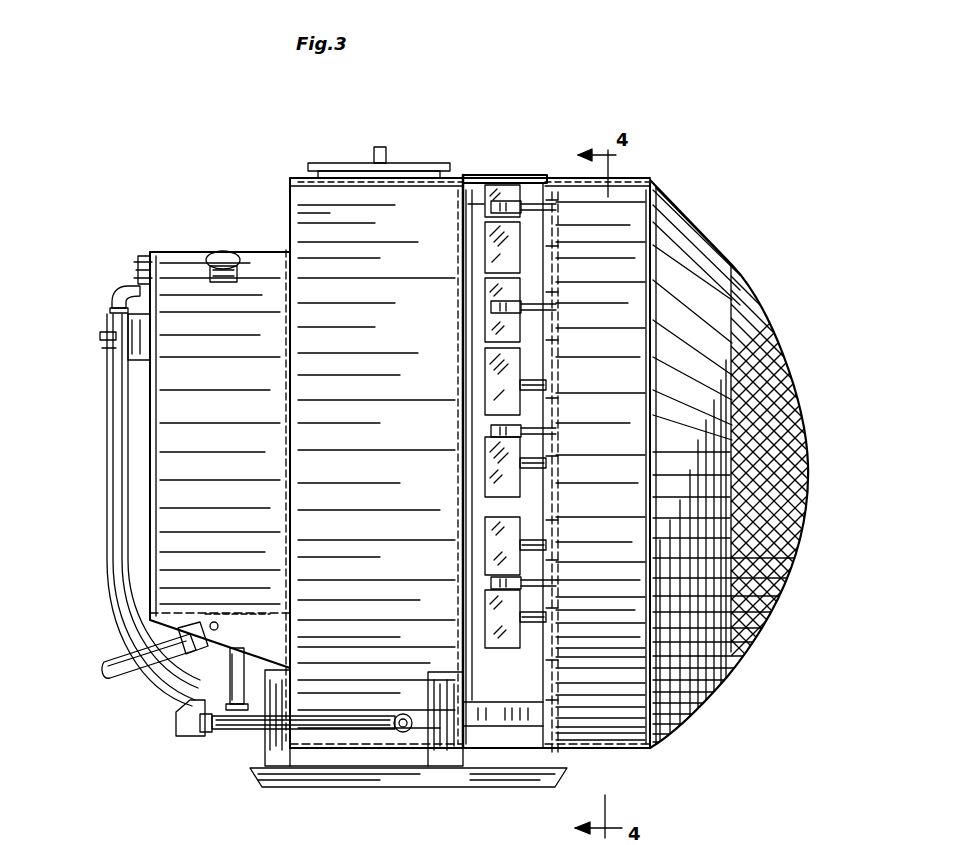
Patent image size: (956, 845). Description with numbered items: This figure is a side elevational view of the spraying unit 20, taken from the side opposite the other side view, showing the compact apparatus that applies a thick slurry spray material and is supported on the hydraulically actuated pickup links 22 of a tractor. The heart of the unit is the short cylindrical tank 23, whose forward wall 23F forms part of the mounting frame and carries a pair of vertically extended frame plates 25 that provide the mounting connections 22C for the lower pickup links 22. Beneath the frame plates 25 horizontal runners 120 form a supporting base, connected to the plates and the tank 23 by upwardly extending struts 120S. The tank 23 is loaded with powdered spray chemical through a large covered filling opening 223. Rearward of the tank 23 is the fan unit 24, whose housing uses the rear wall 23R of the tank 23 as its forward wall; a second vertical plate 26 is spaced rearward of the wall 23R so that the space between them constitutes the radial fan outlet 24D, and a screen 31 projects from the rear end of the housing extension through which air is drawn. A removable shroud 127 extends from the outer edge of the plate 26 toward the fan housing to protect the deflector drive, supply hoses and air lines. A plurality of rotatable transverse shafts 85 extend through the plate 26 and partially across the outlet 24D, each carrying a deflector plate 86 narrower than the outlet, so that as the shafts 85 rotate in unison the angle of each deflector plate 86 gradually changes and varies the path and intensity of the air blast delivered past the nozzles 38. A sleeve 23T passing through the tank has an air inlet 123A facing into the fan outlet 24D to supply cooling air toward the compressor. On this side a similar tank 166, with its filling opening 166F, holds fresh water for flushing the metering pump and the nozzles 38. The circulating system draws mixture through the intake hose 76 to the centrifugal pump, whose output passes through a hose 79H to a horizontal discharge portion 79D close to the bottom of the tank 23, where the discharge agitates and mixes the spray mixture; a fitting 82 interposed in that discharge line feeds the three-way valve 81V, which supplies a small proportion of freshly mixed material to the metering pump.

The spraying unit 20 is at (418, 130).
The pickup links 22 is at (130, 672).
The mounting connections 22C is at (214, 632).
The tank 23 is at (308, 200).
The forward wall 23F is at (295, 378).
The rear wall 23R is at (458, 385).
The sleeve 23T is at (474, 200).
The fan unit 24 is at (702, 278).
The fan outlet 24D is at (462, 508).
The frame plates 25 is at (244, 620).
The vertical plate 26 is at (548, 700).
The screen 31 is at (756, 580).
The nozzles 38 is at (505, 200).
The hose 76 is at (110, 548).
The horizontal discharge portion 79D is at (403, 714).
The hose 79H is at (230, 672).
The three-way valve 81V is at (142, 262).
The fitting 82 is at (132, 290).
The transverse shafts 85 is at (536, 384).
The deflector plate 86 is at (496, 242).
The runners 120 is at (314, 772).
The struts 120S is at (268, 748).
The air inlet 123A is at (470, 208).
The shroud 127 is at (672, 208).
The tank 166 is at (166, 472).
The filling opening 166F is at (222, 284).
The filling opening 223 is at (325, 163).